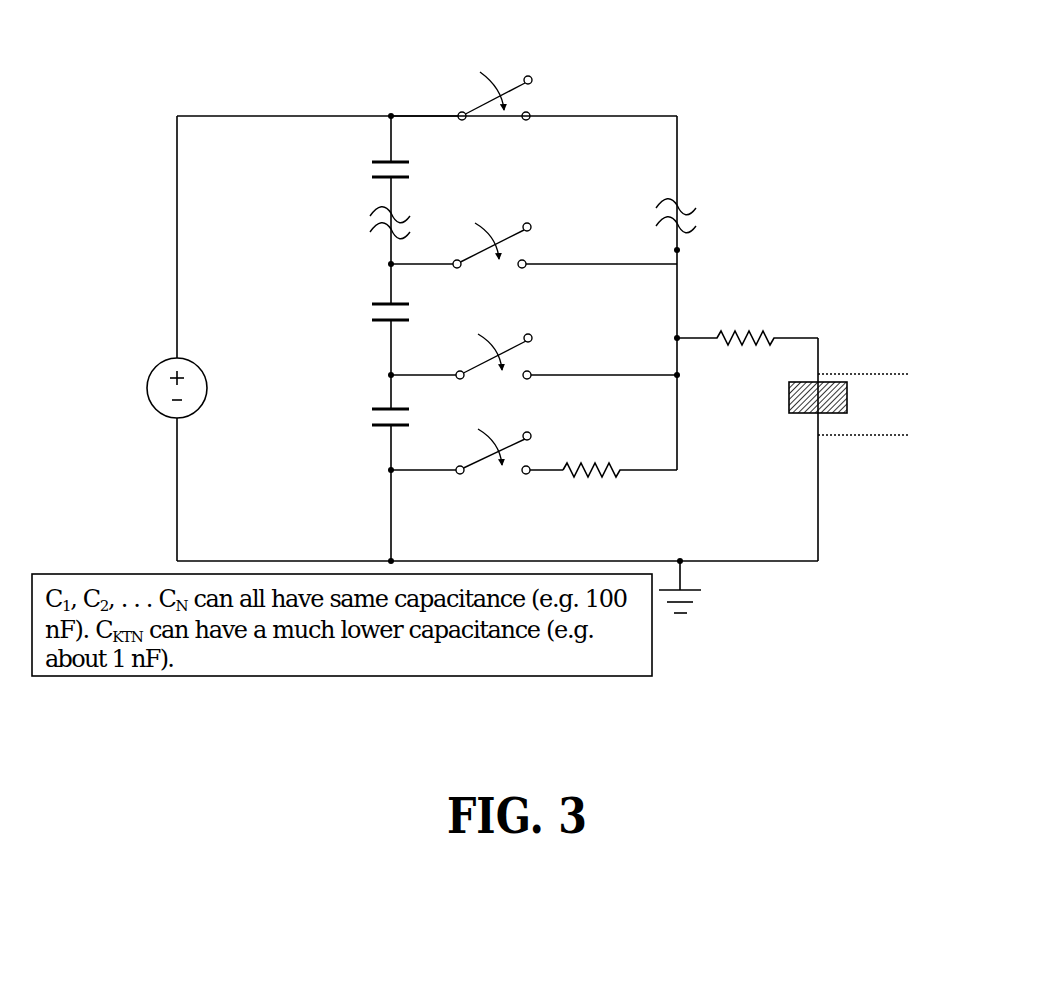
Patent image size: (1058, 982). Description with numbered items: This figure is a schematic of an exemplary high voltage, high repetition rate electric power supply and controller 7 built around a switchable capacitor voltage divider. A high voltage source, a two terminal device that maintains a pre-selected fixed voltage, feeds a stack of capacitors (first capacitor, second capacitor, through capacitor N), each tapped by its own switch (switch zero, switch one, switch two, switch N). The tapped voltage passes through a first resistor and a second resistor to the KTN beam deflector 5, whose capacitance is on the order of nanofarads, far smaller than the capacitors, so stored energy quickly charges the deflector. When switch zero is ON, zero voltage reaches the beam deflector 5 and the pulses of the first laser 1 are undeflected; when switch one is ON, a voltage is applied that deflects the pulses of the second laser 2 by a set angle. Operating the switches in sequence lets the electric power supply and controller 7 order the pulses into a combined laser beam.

The electric power supply and controller 7 is at (215, 108).
The beam deflector 5 is at (843, 320).
The first laser 1 is at (747, 323).
The second laser 2 is at (620, 452).